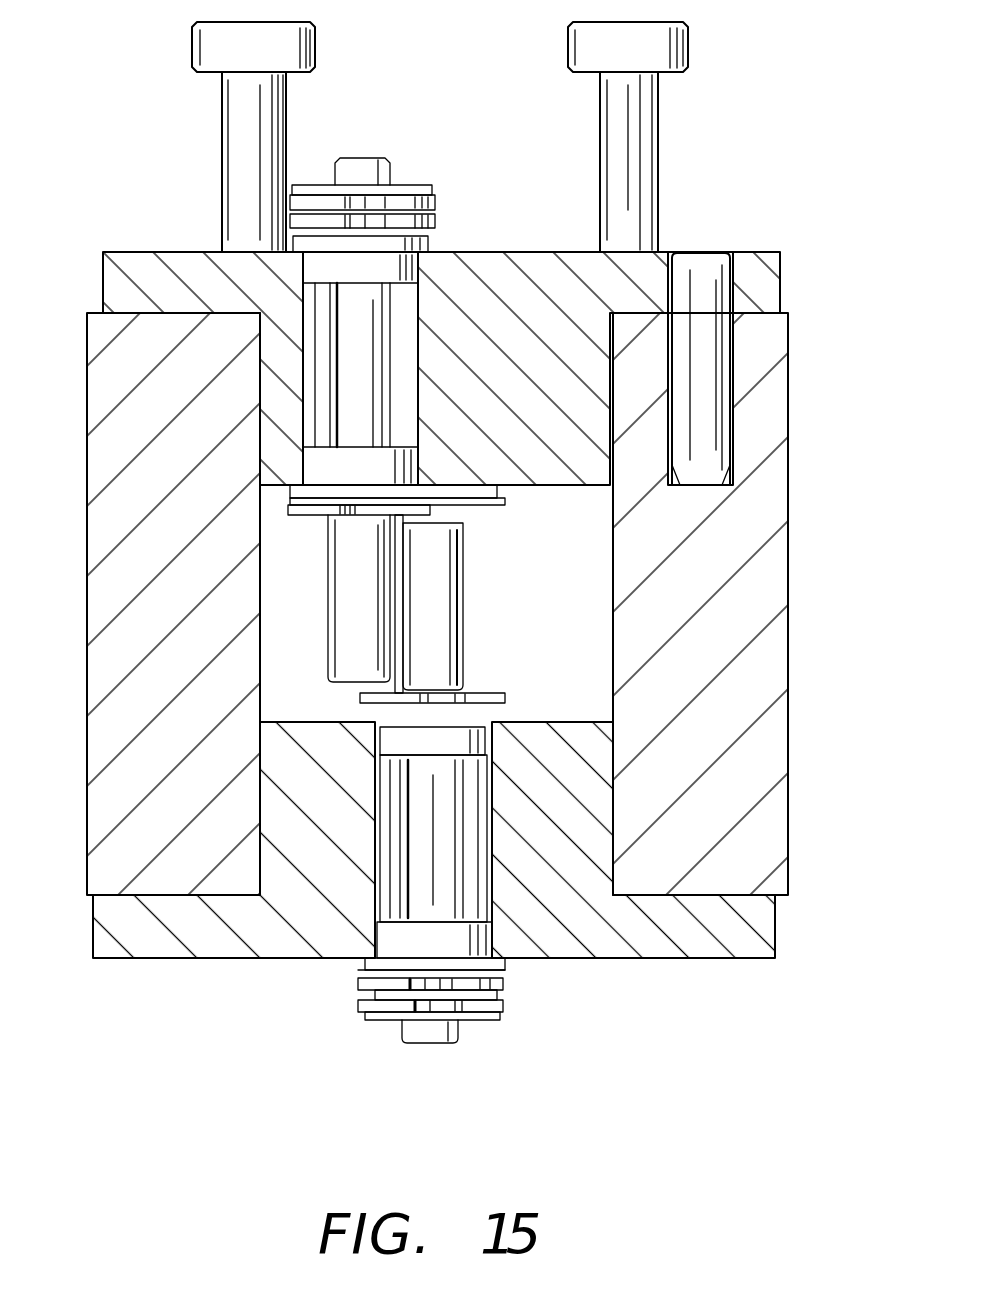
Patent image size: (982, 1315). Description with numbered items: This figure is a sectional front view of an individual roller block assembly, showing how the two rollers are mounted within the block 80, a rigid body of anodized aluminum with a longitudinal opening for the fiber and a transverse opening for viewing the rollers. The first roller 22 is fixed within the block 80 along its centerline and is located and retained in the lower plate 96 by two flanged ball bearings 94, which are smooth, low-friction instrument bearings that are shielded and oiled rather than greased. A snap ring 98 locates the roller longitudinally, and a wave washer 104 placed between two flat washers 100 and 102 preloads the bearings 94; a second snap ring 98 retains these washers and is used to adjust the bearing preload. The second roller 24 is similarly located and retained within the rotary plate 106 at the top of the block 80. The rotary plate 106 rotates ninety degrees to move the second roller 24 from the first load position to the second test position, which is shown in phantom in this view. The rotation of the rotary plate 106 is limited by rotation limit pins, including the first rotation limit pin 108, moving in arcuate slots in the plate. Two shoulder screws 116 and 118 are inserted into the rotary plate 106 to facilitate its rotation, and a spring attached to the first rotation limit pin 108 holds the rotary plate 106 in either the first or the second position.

The first roller 22 is at (433, 598).
The second roller 24 is at (348, 595).
The block 80 is at (780, 562).
The flanged ball bearings 94 is at (360, 470).
The lower plate 96 is at (722, 958).
The snap ring 98 is at (397, 183).
The flat washer 100 is at (435, 223).
The flat washer 102 is at (305, 193).
The wave washer 104 is at (395, 212).
The rotary plate 106 is at (142, 252).
The first rotation limit pin 108 is at (697, 327).
The shoulder screw 116 is at (298, 45).
The shoulder screw 118 is at (665, 45).